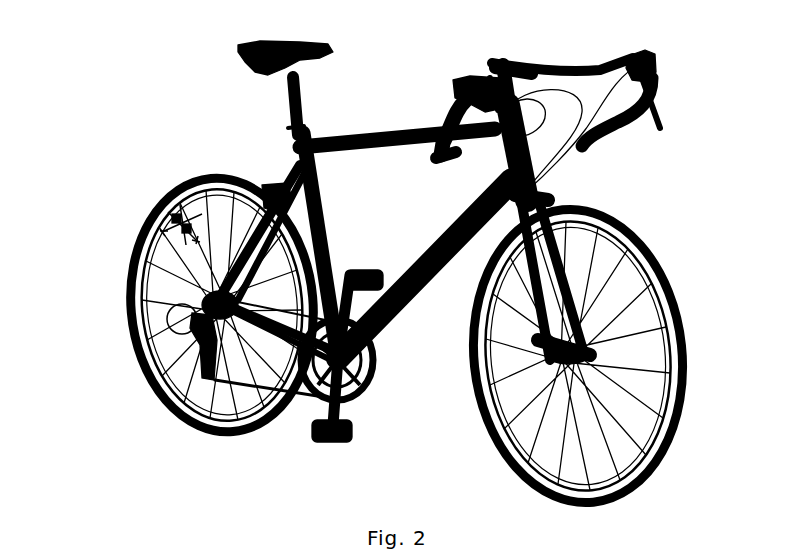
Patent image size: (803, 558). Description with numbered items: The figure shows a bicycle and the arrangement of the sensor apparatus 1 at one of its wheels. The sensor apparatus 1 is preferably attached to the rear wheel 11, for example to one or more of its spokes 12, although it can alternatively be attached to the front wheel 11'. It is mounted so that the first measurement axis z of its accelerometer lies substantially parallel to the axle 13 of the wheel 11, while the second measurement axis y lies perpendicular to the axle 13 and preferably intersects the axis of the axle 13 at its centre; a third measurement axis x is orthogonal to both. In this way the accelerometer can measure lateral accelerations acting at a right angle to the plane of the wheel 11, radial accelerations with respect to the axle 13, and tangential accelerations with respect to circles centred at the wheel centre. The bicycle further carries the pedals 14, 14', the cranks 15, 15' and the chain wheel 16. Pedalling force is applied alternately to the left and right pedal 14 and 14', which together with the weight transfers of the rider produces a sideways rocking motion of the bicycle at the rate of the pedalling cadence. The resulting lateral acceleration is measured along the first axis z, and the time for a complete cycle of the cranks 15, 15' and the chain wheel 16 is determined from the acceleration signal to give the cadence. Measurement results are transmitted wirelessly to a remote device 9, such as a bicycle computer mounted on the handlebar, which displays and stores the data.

The sensor apparatus 1 is at (153, 205).
The remote device 9 is at (530, 65).
The rear wheel 11 is at (195, 305).
The front wheel 11' is at (574, 356).
The spokes 12 is at (190, 393).
The axle 13 is at (190, 313).
The pedal 14 is at (309, 446).
The pedal 14' is at (379, 259).
The crank 15 is at (369, 391).
The crank 15' is at (390, 316).
The chain wheel 16 is at (377, 365).